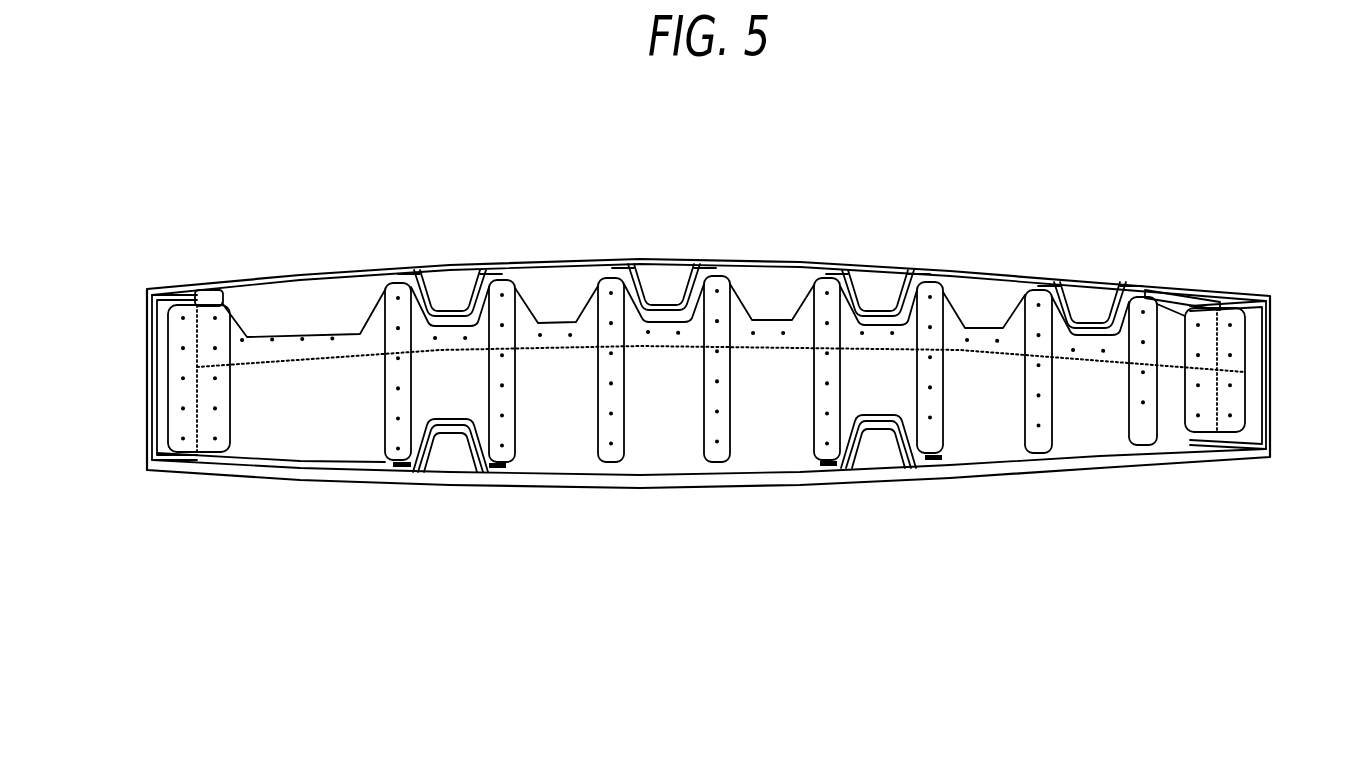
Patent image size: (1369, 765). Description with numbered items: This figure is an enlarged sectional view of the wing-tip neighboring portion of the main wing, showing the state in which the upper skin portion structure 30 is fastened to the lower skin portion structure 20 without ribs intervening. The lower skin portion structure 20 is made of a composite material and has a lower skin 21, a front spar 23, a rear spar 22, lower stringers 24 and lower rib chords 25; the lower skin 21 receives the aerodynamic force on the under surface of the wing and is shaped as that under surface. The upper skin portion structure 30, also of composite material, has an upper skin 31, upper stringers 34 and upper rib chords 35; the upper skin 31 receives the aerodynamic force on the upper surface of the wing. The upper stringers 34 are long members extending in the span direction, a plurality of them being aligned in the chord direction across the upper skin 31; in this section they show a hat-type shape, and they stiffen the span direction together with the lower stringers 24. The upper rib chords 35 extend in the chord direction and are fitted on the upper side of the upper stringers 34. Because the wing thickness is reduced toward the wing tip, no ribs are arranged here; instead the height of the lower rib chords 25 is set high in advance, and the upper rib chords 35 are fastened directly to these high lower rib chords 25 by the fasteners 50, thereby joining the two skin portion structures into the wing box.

The lower skin portion structure 20 is at (706, 379).
The lower skin 21 is at (641, 482).
The rear spar 22 is at (145, 414).
The front spar 23 is at (1270, 385).
The lower stringers 24 is at (449, 474).
The lower rib chords 25 is at (292, 468).
The upper skin portion structure 30 is at (709, 240).
The upper skin 31 is at (990, 268).
The upper stringers 34 is at (447, 300).
The upper rib chords 35 is at (553, 292).
The fasteners 50 is at (215, 320).